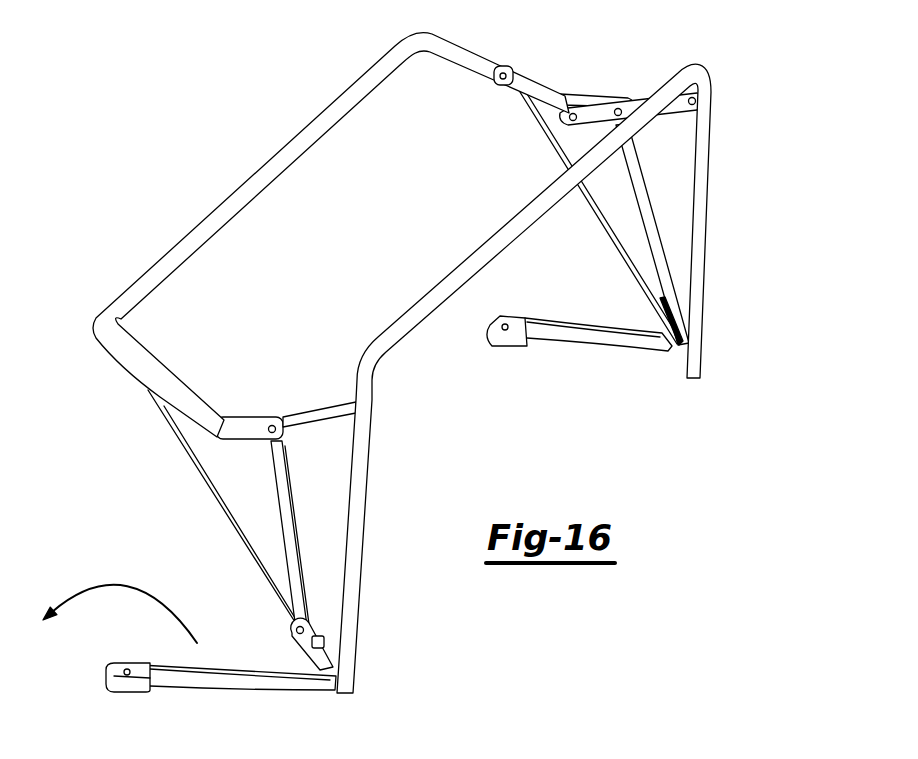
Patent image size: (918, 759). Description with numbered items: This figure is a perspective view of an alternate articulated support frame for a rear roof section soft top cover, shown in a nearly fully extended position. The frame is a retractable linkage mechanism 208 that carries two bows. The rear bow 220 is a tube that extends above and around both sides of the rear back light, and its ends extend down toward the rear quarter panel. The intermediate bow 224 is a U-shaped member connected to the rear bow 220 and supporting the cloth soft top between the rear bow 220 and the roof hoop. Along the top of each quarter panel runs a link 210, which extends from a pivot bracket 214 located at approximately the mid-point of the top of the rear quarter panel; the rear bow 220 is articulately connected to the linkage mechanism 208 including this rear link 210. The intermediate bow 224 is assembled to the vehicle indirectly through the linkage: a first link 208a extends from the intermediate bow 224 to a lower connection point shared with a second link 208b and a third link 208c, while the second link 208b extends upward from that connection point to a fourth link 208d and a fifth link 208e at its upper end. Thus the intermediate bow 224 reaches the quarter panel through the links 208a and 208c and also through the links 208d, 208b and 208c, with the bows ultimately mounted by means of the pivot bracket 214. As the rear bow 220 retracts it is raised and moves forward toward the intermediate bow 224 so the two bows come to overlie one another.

The retractable linkage mechanism 208 is at (417, 390).
The first link 208a is at (207, 473).
The second link 208b is at (285, 527).
The third link 208c is at (305, 654).
The fourth link 208d is at (236, 418).
The fifth link 208e is at (301, 416).
The link 210 is at (258, 690).
The pivot bracket 214 is at (113, 674).
The rear bow 220 is at (487, 250).
The intermediate bow 224 is at (242, 194).